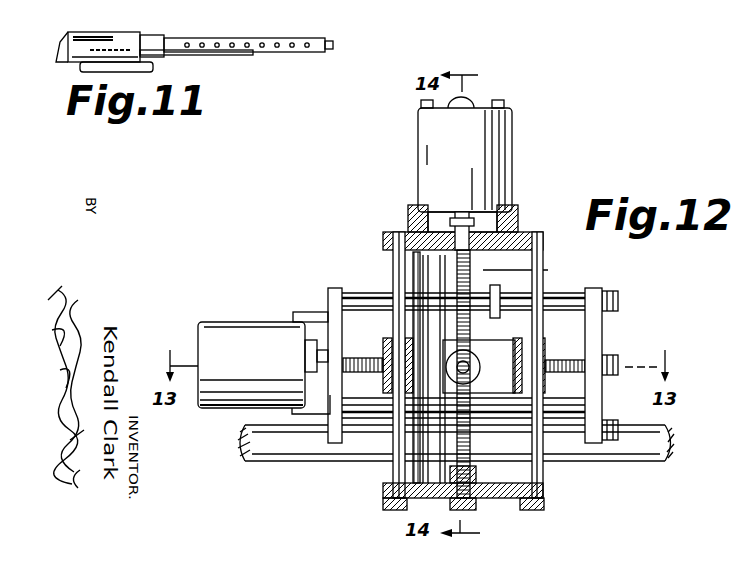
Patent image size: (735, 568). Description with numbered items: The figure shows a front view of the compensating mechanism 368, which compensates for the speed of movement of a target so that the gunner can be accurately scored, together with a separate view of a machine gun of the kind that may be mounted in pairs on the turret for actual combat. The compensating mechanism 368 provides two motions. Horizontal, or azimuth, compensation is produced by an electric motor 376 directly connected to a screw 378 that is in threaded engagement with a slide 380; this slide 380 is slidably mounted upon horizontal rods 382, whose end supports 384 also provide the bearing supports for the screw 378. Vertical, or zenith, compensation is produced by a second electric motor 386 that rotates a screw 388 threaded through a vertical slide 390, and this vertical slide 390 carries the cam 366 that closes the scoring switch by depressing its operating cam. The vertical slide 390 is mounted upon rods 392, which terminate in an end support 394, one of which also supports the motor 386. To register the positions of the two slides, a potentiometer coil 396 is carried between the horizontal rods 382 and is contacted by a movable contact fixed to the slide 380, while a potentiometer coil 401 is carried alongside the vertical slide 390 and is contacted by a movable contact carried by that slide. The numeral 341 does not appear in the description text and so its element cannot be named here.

The shaft 341 is at (648, 460).
The cam 366 is at (471, 366).
The compensating mechanism 368 is at (352, 260).
The electric motor 376 is at (257, 332).
The screw 378 is at (553, 357).
The slide 380 is at (517, 374).
The rods 382 is at (568, 300).
The end supports 384 is at (596, 330).
The electric motor 386 is at (500, 145).
The screw 388 is at (458, 461).
The vertical slide 390 is at (508, 223).
The rods 392 is at (533, 256).
The end support 394 is at (497, 498).
The potentiometer coil 396 is at (565, 400).
The potentiometer coil 401 is at (414, 262).